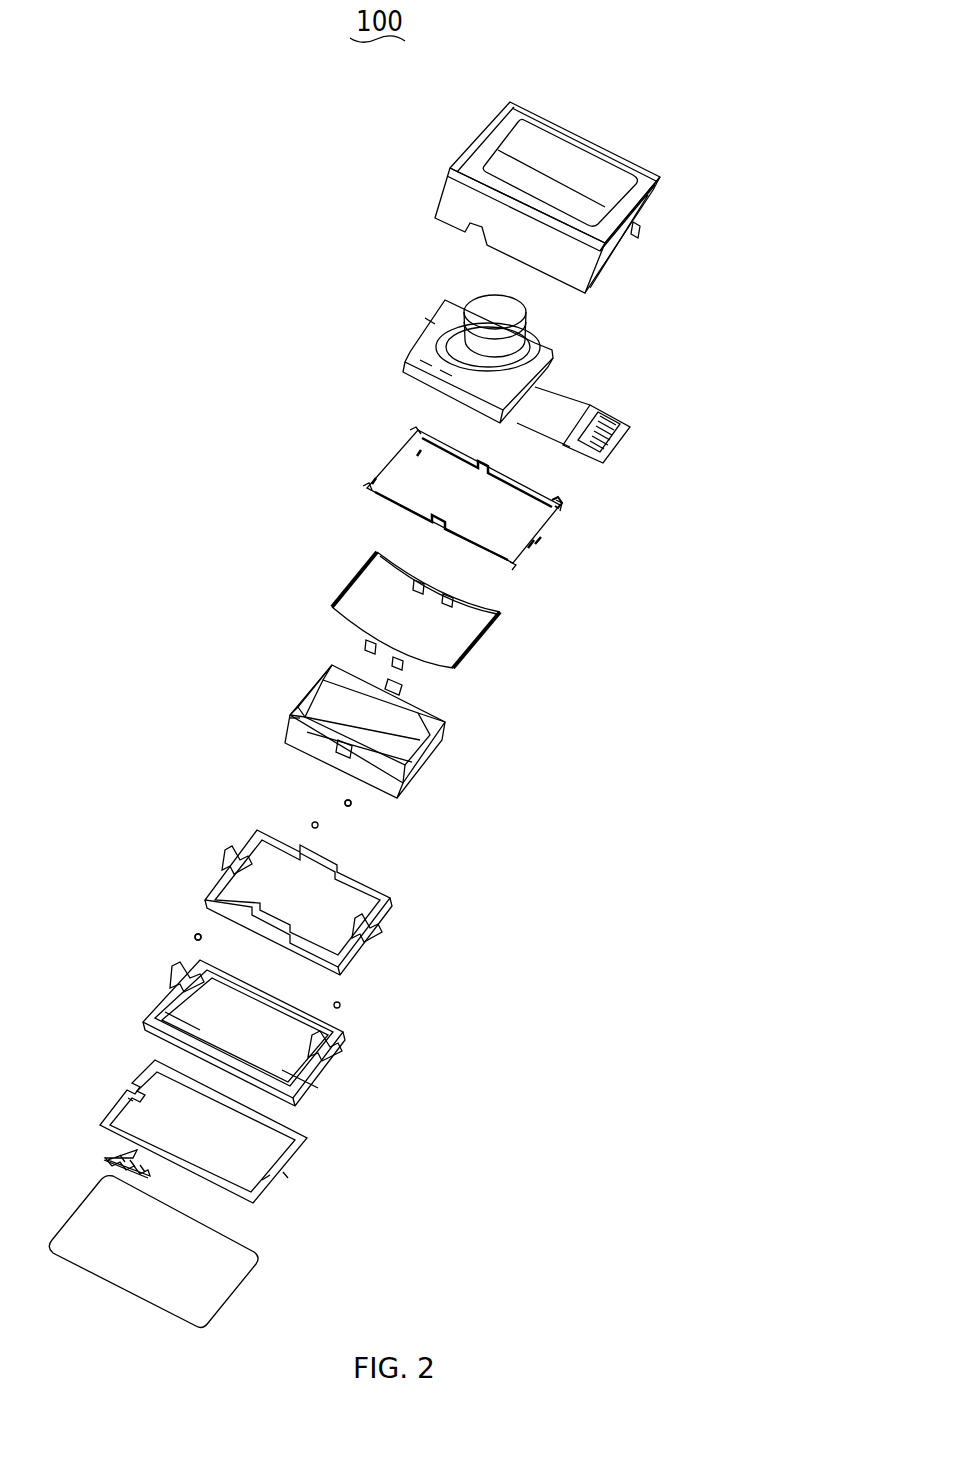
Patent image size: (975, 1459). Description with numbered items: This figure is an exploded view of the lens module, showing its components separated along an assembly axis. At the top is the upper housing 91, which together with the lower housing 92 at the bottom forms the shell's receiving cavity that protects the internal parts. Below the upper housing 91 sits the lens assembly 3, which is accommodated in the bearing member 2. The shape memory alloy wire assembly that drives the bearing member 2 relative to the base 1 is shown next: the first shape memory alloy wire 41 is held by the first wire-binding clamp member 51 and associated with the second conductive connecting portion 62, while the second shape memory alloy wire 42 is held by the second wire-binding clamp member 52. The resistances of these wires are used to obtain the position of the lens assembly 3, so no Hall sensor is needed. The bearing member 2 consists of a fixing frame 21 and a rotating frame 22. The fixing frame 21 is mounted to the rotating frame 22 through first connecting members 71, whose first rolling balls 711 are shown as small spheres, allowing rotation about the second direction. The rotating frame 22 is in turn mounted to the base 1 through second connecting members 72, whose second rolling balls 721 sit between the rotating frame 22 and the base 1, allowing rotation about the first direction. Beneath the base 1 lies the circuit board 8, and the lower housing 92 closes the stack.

The upper housing 91 is at (470, 140).
The lens assembly 3 is at (434, 322).
The first shape memory alloy wire 41 is at (396, 434).
The first wire-binding clamp member 51 is at (552, 497).
The second conductive connecting portion 62 is at (540, 540).
The second wire-binding clamp member 52 is at (360, 566).
The second shape memory alloy wire 42 is at (430, 664).
The bearing member 2 is at (173, 713).
The fixing frame 21 is at (290, 705).
The rotating frame 22 is at (255, 840).
The first rolling ball 711 is at (352, 805).
The first connecting member 71 is at (480, 812).
The second rolling ball 721 is at (201, 940).
The second connecting member 72 is at (448, 978).
The base 1 is at (312, 1080).
The circuit board 8 is at (275, 1177).
The lower housing 92 is at (240, 1302).